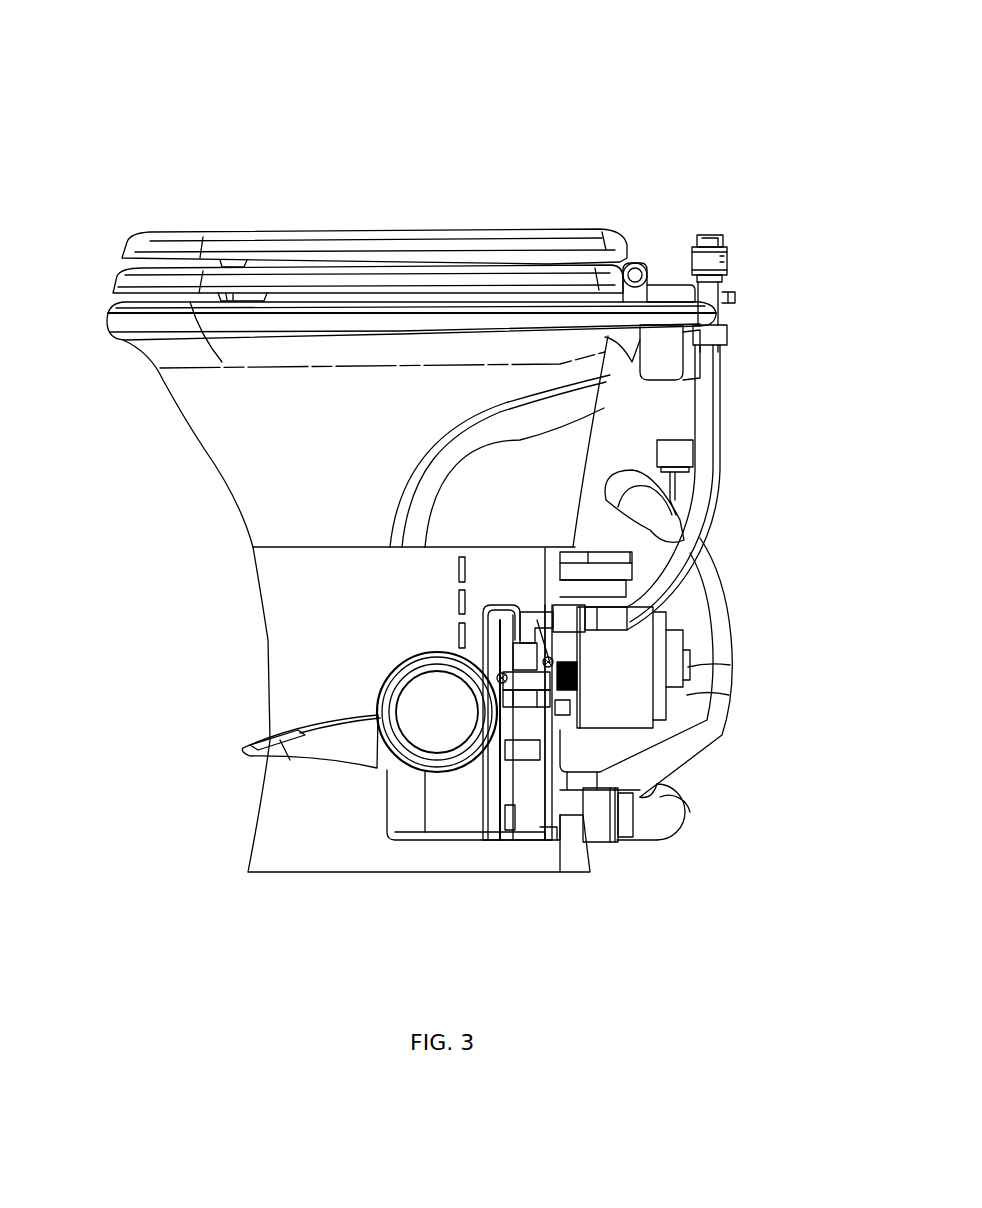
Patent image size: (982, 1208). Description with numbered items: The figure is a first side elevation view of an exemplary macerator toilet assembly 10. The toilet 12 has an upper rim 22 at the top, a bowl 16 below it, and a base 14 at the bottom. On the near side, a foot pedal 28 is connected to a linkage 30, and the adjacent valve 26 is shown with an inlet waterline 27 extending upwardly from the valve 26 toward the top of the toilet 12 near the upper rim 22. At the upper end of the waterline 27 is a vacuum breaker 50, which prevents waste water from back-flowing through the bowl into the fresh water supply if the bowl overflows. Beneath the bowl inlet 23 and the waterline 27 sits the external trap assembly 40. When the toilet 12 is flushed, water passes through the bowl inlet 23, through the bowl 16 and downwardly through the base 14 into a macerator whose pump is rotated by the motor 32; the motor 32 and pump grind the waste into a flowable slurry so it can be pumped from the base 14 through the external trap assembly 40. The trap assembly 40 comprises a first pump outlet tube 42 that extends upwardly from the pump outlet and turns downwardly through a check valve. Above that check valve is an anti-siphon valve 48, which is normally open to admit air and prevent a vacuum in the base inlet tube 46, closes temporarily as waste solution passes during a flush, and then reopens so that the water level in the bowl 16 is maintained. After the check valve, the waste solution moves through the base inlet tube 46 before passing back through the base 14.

The toilet assembly 10 is at (722, 72).
The toilet 12 is at (313, 172).
The base 14 is at (292, 643).
The bowl 16 is at (192, 458).
The upper rim 22 is at (127, 306).
The bowl inlet 23 is at (665, 383).
The valve 26 is at (524, 695).
The inlet waterline 27 is at (695, 506).
The foot pedal 28 is at (243, 740).
The linkage 30 is at (390, 767).
The motor 32 is at (605, 688).
The external trap assembly 40 is at (783, 758).
The first pump outlet tube 42 is at (653, 753).
The base inlet tube 46 is at (598, 835).
The anti-siphon valve 48 is at (643, 458).
The vacuum breaker 50 is at (718, 258).